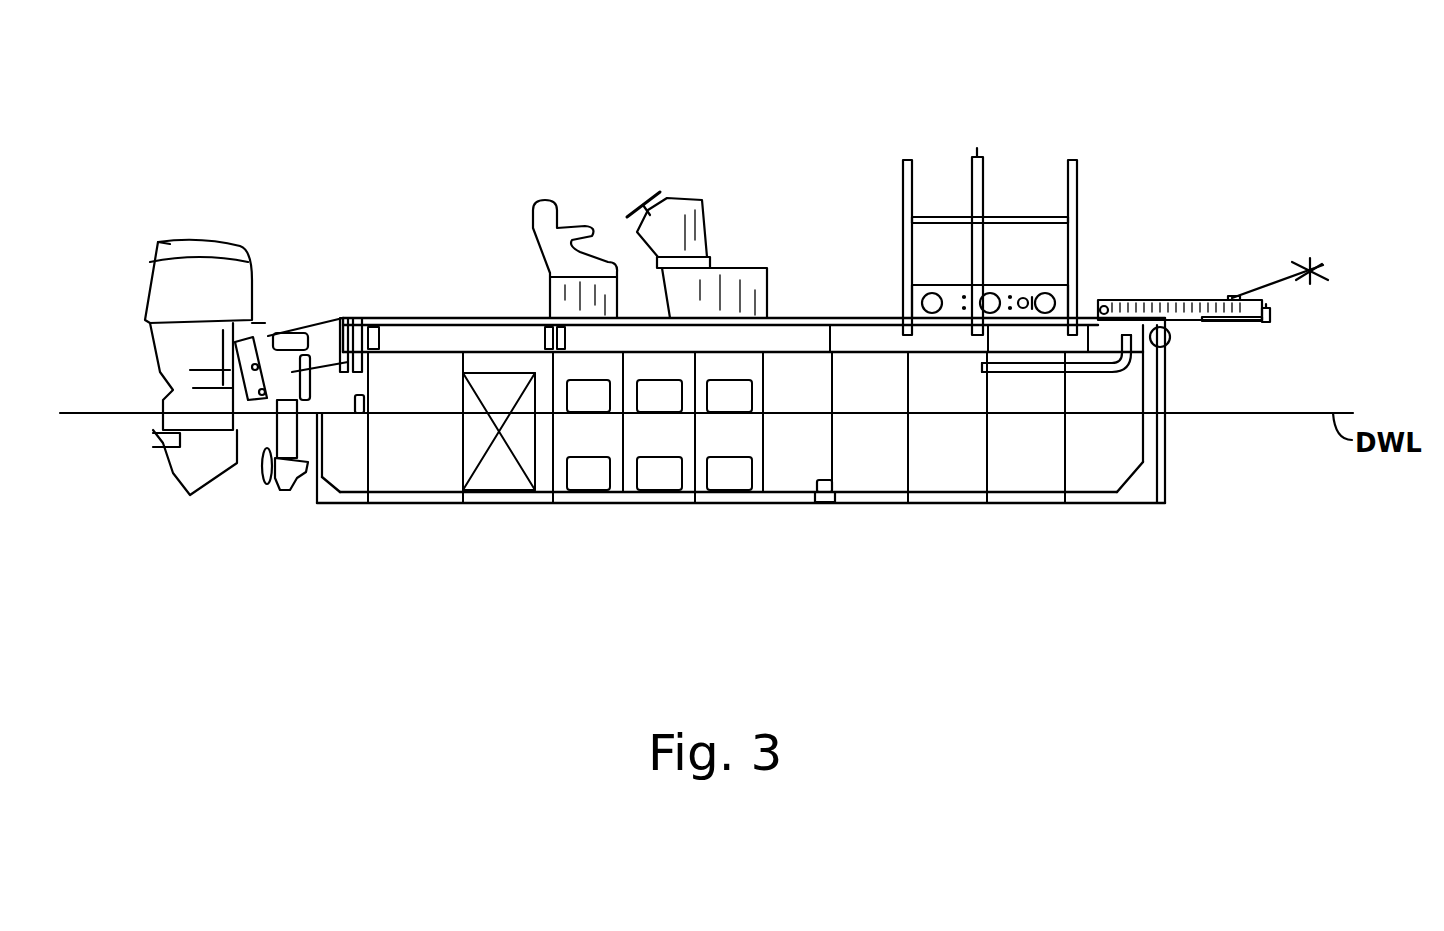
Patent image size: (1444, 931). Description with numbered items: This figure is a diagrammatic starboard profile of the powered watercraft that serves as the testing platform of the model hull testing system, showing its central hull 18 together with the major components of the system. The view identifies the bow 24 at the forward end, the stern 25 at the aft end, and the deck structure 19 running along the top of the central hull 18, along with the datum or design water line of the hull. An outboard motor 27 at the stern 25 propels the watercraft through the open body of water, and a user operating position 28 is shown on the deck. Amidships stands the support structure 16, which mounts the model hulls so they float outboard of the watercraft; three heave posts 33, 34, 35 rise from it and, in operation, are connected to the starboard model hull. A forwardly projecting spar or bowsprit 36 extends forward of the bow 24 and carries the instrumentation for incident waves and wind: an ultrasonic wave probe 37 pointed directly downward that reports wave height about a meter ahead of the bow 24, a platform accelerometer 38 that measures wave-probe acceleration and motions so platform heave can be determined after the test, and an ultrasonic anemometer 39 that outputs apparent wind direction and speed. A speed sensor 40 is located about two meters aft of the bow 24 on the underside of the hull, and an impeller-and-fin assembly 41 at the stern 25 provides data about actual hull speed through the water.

The support structure 16 is at (930, 290).
The central hull 18 is at (1128, 512).
The deck structure 19 is at (480, 318).
The bow 24 is at (1166, 475).
The stern 25 is at (312, 493).
The outboard motor 27 is at (196, 242).
The user operating position 28 is at (540, 205).
The heave post 33 is at (910, 224).
The heave post 34 is at (967, 232).
The heave post 35 is at (1058, 230).
The bowsprit 36 is at (1150, 300).
The ultrasonic wave probe 37 is at (1272, 318).
The platform accelerometer 38 is at (1233, 296).
The ultrasonic anemometer 39 is at (1312, 278).
The speed sensor 40 is at (835, 487).
The impeller-and-fin assembly 41 is at (362, 402).